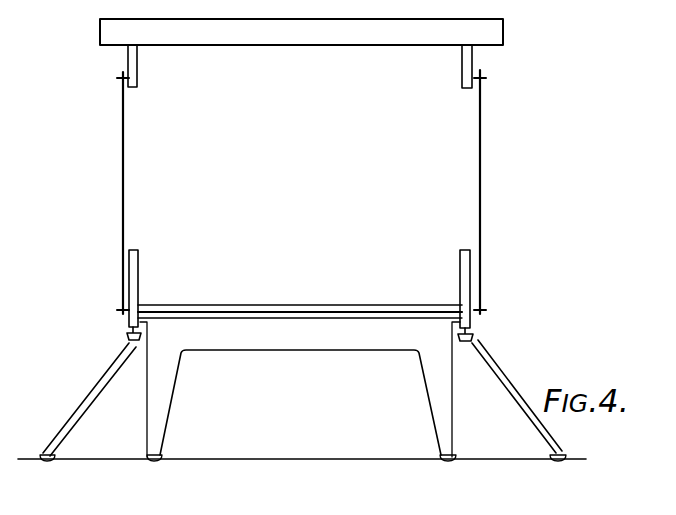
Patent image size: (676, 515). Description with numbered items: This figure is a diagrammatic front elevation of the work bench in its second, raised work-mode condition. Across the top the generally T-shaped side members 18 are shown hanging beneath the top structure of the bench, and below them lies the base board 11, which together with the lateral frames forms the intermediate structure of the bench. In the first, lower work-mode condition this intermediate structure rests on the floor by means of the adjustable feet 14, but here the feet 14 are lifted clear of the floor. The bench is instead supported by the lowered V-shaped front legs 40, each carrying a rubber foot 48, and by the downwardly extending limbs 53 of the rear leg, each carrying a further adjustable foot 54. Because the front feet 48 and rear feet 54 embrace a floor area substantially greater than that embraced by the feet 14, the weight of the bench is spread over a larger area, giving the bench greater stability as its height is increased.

The base board 11 is at (337, 306).
The adjustable feet 14 is at (127, 350).
The T-shaped side members 18 is at (139, 73).
The front legs 40 is at (512, 390).
The rubber foot 48 is at (154, 462).
The downwardly extending limbs 53 is at (306, 352).
The adjustable foot 54 is at (48, 461).